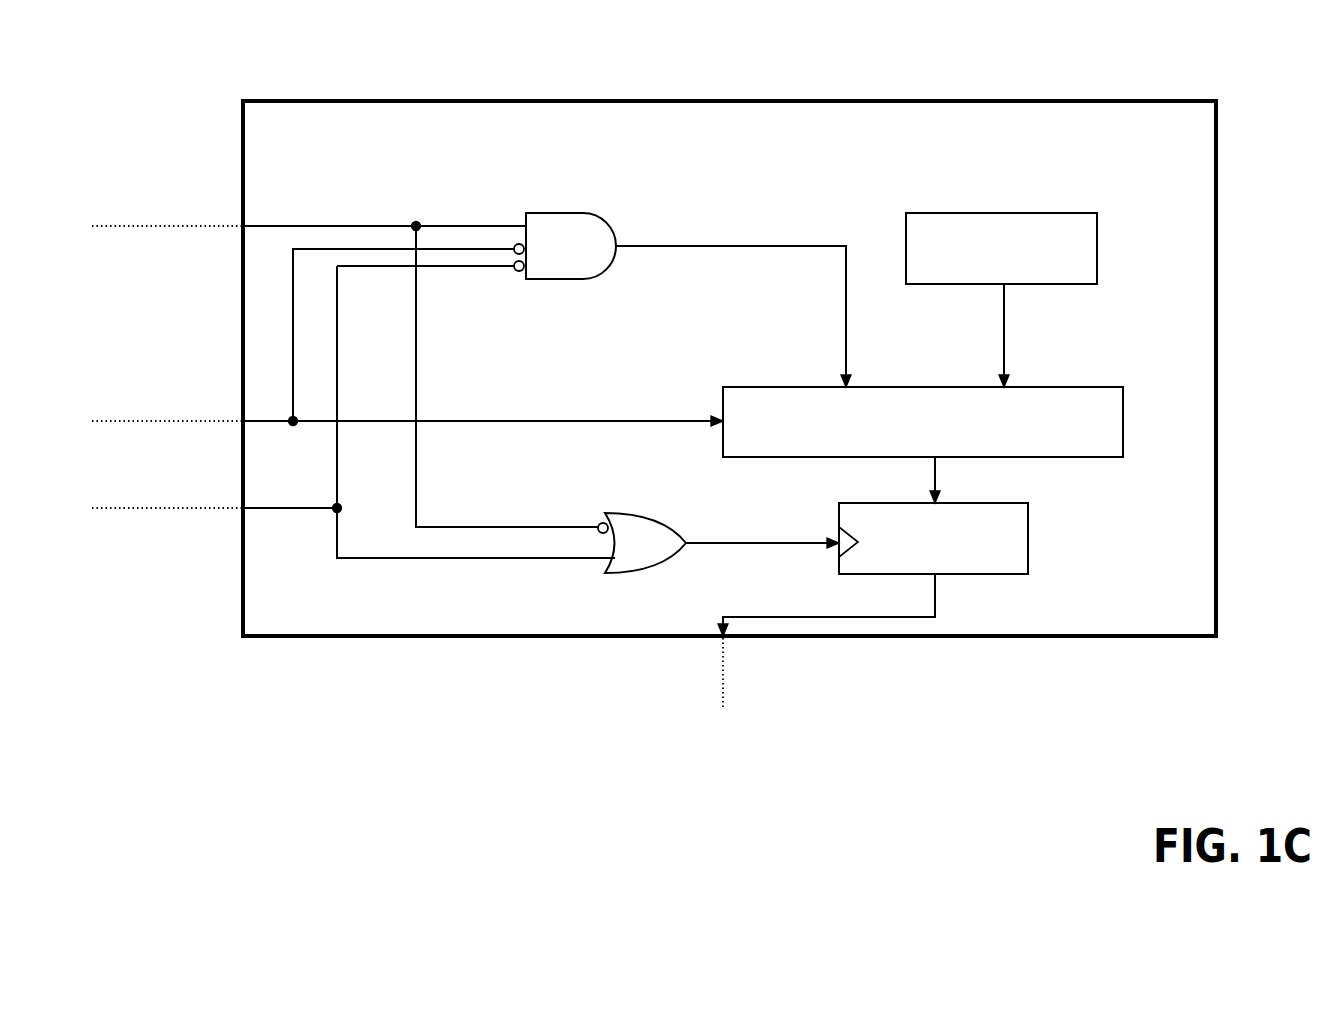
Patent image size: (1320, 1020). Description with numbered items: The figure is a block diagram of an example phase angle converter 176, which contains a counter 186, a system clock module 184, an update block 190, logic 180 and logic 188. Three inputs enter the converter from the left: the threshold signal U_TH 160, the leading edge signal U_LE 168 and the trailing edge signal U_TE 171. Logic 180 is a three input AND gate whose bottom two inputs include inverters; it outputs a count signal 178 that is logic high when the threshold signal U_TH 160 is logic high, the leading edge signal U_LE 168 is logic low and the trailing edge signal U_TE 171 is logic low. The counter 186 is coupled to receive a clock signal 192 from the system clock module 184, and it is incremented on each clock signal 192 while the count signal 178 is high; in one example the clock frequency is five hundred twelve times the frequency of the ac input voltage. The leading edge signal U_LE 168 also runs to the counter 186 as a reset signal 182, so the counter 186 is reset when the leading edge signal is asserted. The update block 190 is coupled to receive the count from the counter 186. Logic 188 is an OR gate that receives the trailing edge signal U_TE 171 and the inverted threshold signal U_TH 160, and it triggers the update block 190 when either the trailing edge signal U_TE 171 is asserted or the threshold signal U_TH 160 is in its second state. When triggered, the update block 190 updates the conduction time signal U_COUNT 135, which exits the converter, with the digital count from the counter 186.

The conduction time signal U_COUNT 135 is at (674, 729).
The threshold signal U_TH 160 is at (187, 201).
The leading edge signal U_LE 168 is at (178, 389).
The trailing edge signal U_TE 171 is at (207, 462).
The phase angle converter 176 is at (1144, 99).
The count signal 178 is at (763, 222).
The logic 180 is at (593, 210).
The reset signal 182 is at (549, 398).
The system clock module 184 is at (1036, 205).
The counter 186 is at (1126, 422).
The logic 188 is at (663, 518).
The update block 190 is at (1034, 538).
The clock signal 192 is at (1100, 344).